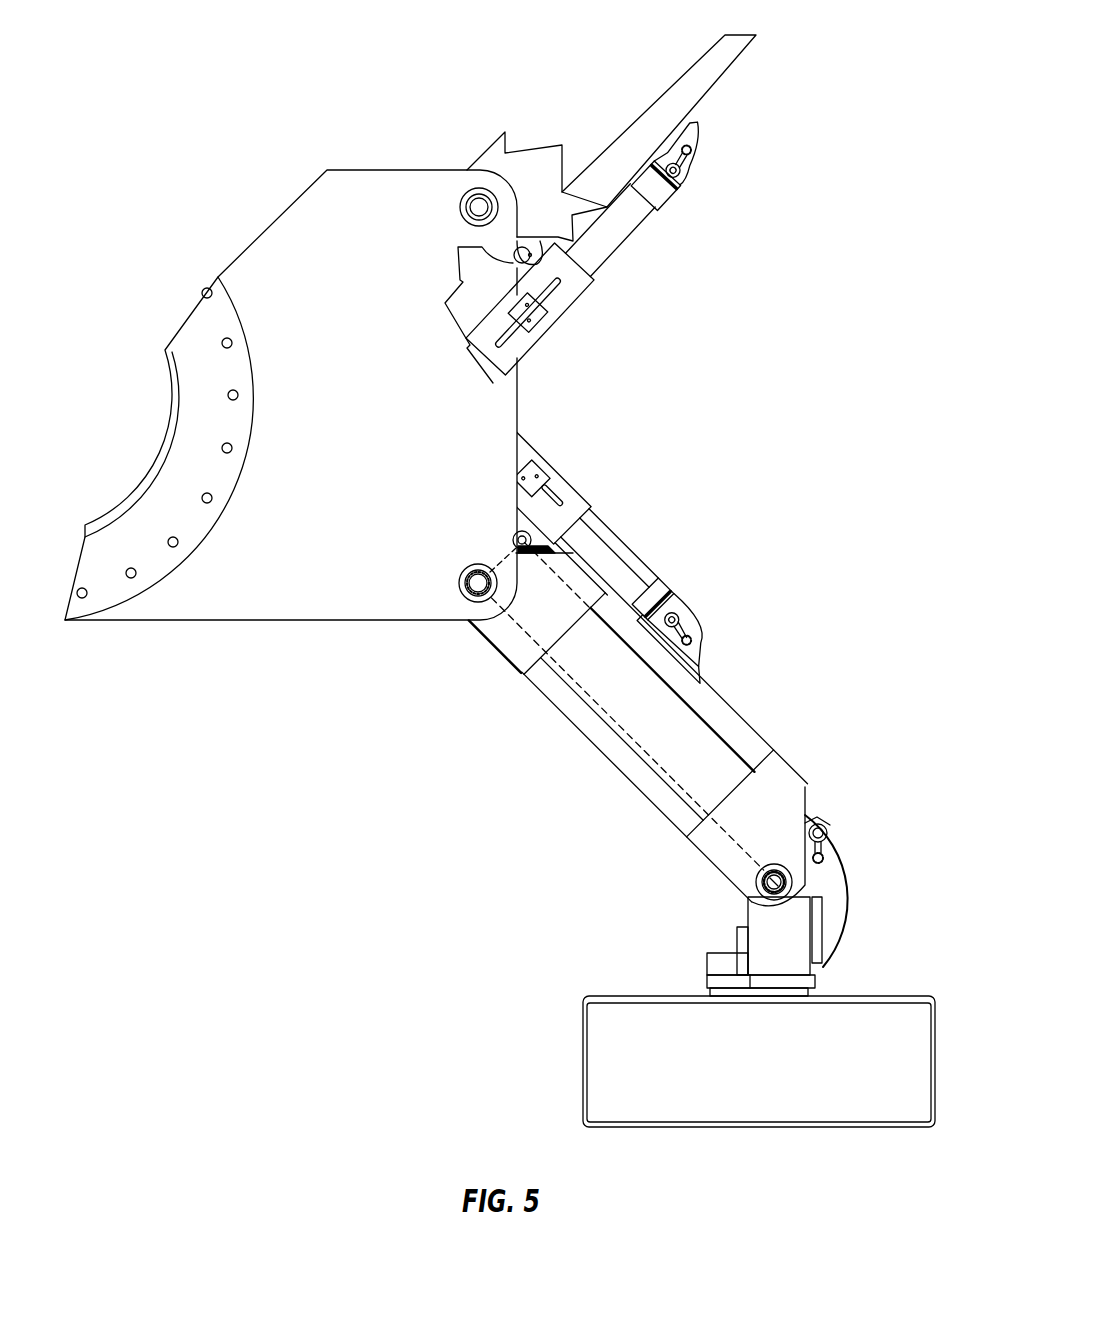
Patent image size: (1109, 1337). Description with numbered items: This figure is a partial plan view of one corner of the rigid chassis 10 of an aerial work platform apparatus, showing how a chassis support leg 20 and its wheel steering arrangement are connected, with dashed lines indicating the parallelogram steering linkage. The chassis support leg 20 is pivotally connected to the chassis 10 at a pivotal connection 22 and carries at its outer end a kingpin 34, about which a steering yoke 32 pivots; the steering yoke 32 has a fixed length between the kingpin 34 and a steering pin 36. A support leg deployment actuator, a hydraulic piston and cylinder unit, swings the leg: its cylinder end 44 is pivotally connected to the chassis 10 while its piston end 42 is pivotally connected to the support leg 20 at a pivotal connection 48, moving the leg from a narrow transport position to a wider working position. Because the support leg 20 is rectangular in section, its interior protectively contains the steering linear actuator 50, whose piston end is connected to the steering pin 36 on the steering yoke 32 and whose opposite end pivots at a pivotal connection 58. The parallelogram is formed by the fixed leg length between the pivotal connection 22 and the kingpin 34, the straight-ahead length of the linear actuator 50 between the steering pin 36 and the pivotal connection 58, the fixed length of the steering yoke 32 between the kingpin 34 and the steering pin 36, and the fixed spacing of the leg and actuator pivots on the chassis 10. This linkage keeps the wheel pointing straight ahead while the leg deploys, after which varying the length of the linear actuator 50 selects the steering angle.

The rigid chassis 10 is at (396, 468).
The chassis support leg 20 is at (737, 722).
The pivotal connection of support leg to chassis 22 is at (488, 193).
The steering yoke 32 is at (850, 880).
The kingpin 34 is at (793, 883).
The steering pin 36 is at (828, 835).
The piston end 42 is at (620, 233).
The cylinder end 44 is at (573, 303).
The pivotal connection of piston end to support leg 48 is at (685, 172).
The linear actuator 50 is at (645, 102).
The pivotal connection of steering actuator 58 is at (528, 535).